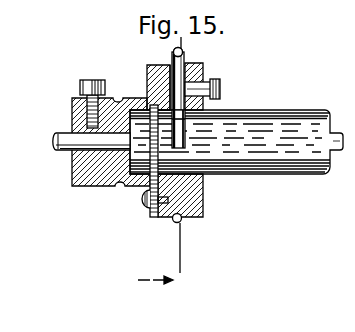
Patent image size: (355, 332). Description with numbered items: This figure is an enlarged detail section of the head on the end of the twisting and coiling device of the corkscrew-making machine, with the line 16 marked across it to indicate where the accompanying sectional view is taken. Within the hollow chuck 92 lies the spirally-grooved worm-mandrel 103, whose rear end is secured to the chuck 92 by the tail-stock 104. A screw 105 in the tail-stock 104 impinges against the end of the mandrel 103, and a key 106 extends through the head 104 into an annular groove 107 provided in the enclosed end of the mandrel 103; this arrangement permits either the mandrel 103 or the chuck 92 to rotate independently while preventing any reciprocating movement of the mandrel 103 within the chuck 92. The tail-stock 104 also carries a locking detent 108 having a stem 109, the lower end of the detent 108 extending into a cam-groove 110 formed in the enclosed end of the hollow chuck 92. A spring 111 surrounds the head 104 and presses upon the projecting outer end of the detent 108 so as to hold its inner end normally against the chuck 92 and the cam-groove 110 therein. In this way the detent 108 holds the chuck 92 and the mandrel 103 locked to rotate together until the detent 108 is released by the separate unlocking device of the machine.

The hollow chuck 92 is at (290, 175).
The worm-mandrel 103 is at (57, 151).
The tail-stock 104 is at (200, 218).
The screw 105 is at (79, 86).
The key 106 is at (153, 218).
The annular groove 107 is at (147, 97).
The locking detent 108 is at (184, 53).
The stem 109 is at (216, 79).
The cam-groove 110 is at (190, 135).
The spring 111 is at (173, 52).
The section line 16 is at (169, 160).